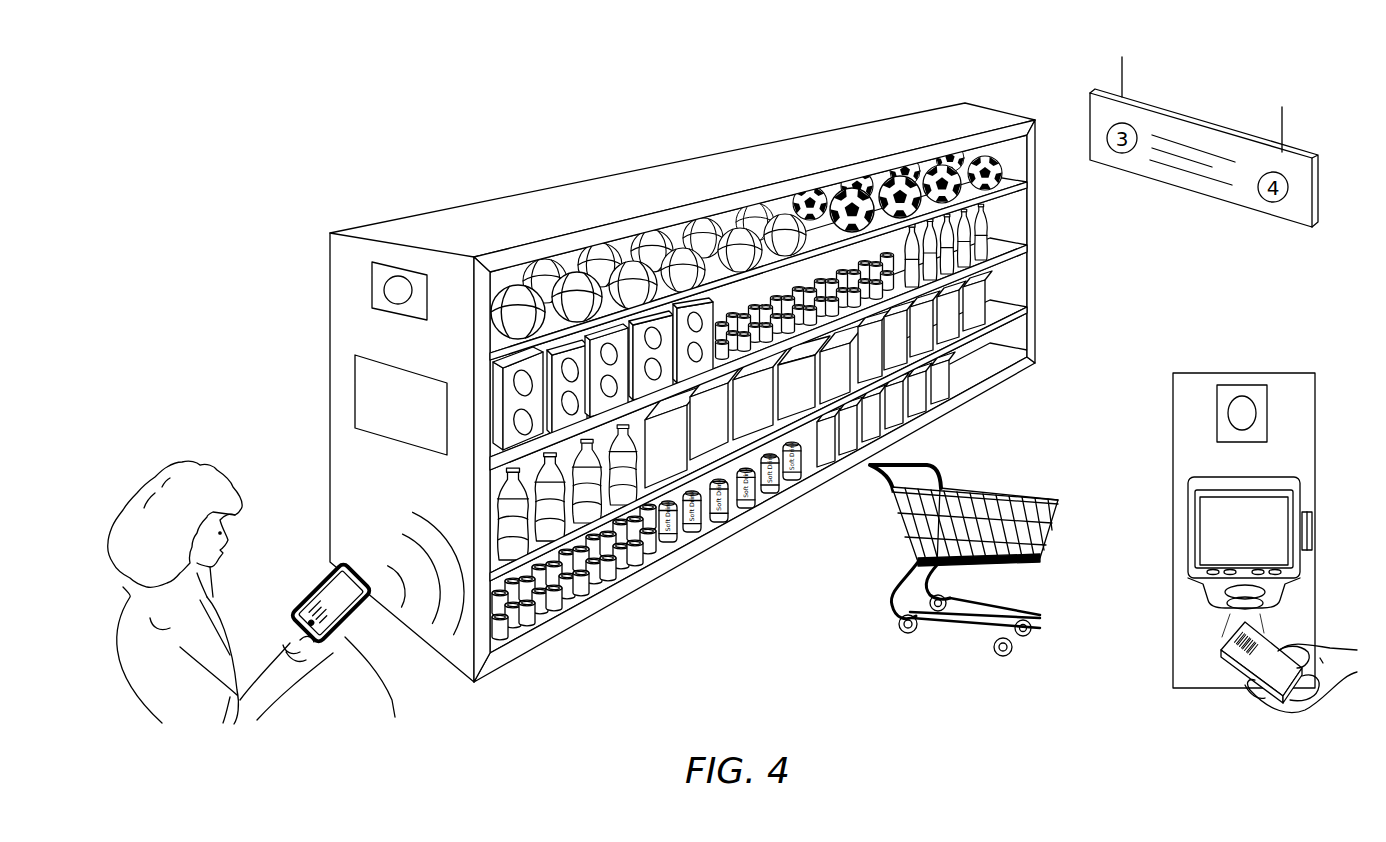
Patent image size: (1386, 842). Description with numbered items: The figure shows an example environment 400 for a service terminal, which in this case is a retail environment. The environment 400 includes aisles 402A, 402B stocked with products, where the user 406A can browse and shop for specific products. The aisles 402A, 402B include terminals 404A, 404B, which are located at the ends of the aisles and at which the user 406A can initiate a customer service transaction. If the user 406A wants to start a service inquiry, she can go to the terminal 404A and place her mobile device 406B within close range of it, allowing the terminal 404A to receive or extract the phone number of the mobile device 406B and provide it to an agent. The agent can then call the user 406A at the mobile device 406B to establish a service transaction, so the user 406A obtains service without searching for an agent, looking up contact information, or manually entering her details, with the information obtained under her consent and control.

The environment 400 is at (804, 606).
The aisle 402A is at (398, 262).
The aisle 402B is at (1240, 383).
The terminal 404A is at (363, 382).
The terminal 404B is at (1203, 548).
The user 406A is at (178, 462).
The mobile device 406B is at (356, 653).